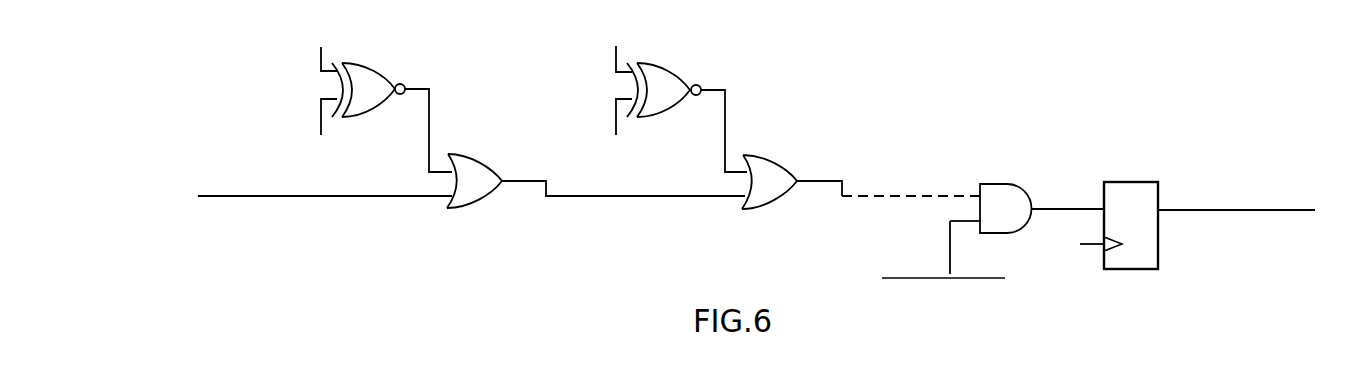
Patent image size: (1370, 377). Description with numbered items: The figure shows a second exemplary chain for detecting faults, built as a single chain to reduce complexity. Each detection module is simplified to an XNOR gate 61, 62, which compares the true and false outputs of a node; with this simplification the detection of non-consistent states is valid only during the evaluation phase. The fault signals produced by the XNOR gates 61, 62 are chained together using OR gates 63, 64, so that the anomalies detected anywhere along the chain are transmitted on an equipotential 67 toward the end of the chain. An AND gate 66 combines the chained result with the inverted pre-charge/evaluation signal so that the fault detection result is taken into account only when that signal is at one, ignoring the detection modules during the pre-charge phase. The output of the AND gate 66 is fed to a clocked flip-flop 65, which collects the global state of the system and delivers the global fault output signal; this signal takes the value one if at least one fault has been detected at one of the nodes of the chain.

The XNOR gate 61 is at (368, 82).
The XNOR gate 62 is at (663, 83).
The OR gate 63 is at (470, 196).
The OR gate 64 is at (765, 197).
The flip-flop 65 is at (1135, 256).
The AND gate 66 is at (1000, 192).
The equipotential 67 is at (335, 197).